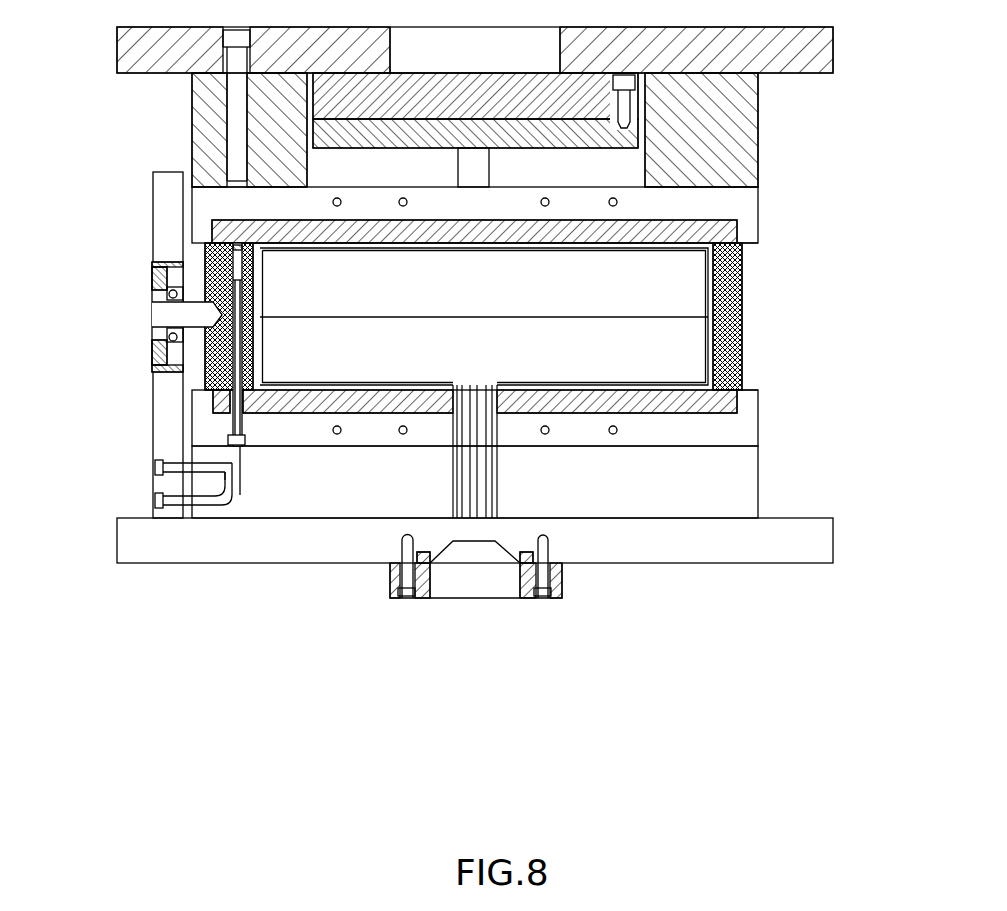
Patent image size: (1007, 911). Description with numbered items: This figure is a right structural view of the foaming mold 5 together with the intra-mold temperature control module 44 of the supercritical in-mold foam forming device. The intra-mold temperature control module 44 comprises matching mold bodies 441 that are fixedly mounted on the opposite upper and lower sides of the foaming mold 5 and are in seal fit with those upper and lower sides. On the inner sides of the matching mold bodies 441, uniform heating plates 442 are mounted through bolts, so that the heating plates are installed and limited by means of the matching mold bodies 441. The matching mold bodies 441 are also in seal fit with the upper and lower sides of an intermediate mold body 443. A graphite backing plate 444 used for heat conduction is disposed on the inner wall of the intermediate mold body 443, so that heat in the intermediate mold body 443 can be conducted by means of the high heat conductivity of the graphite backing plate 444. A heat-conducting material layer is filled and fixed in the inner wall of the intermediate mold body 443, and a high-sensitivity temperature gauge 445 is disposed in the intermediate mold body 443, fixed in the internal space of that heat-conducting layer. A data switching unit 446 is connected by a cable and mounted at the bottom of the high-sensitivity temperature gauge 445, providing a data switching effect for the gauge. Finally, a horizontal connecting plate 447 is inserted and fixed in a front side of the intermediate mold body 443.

The foaming mold 5 is at (700, 551).
The intra-mold temperature control module 44 is at (163, 313).
The matching mold bodies 441 is at (747, 196).
The uniform heating plates 442 is at (713, 400).
The intermediate mold body 443 is at (748, 277).
The graphite backing plate 444 is at (697, 350).
The high-sensitivity temperature gauge 445 is at (237, 375).
The data switching unit 446 is at (155, 463).
The horizontal connecting plate 447 is at (168, 228).